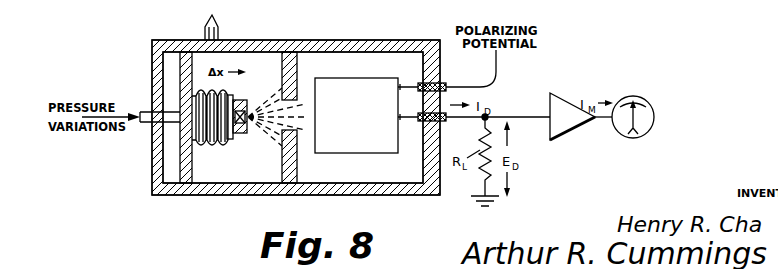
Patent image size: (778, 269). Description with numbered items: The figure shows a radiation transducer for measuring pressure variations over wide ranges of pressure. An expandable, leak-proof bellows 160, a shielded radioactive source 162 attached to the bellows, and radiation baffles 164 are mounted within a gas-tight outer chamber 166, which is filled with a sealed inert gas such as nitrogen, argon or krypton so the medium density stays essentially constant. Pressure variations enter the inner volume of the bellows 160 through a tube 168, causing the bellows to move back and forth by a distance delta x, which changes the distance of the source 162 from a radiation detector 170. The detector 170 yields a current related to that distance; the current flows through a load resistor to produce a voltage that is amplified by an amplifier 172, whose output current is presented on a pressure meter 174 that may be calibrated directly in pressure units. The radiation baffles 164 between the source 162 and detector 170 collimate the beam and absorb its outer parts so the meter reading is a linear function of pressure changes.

The bellows 160 is at (207, 142).
The shielded radioactive source 162 is at (242, 134).
The radiation baffles 164 is at (296, 162).
The gas-tight outer chamber 166 is at (340, 40).
The tube 168 is at (143, 112).
The radiation detector 170 is at (343, 135).
The amplifier 172 is at (552, 93).
The pressure meter 174 is at (655, 115).